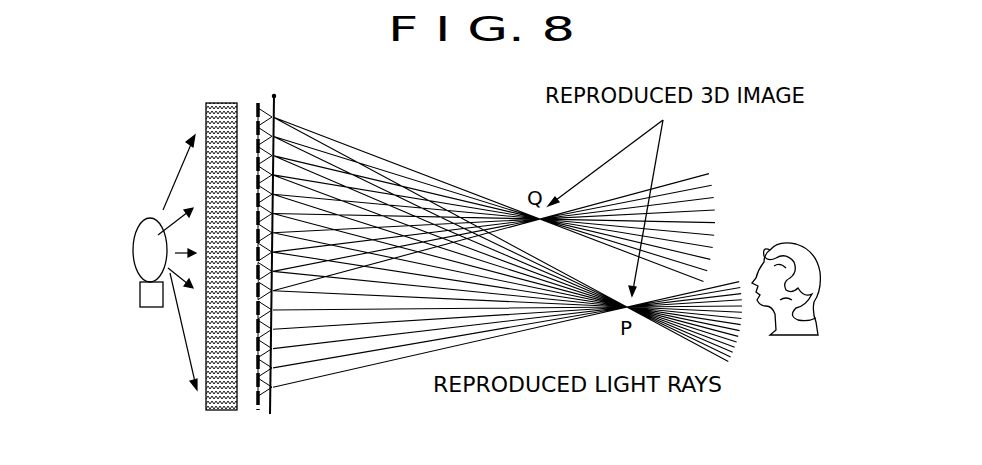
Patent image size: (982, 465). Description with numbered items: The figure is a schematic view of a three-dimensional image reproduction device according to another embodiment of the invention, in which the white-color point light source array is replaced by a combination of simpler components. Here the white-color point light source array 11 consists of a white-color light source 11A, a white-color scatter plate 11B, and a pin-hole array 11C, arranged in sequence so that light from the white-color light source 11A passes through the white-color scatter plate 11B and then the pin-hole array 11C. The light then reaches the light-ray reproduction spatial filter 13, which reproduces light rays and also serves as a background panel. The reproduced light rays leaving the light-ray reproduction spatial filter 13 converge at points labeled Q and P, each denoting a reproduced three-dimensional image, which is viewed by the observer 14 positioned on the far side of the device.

The white-color point light source array 11 is at (260, 97).
The white-color light source 11A is at (133, 257).
The white-color scatter plate 11B is at (206, 124).
The pin-hole array 11C is at (248, 405).
The light-ray reproduction spatial filter 13 is at (277, 94).
The observer 14 is at (800, 340).